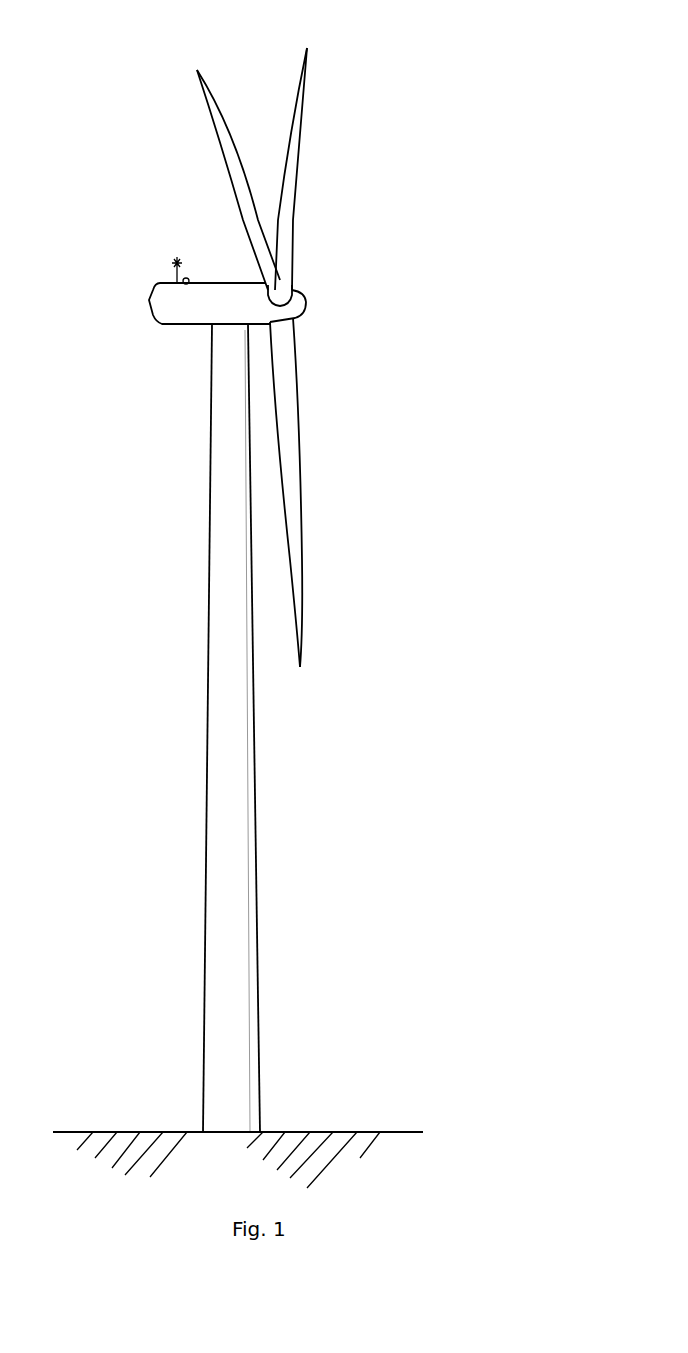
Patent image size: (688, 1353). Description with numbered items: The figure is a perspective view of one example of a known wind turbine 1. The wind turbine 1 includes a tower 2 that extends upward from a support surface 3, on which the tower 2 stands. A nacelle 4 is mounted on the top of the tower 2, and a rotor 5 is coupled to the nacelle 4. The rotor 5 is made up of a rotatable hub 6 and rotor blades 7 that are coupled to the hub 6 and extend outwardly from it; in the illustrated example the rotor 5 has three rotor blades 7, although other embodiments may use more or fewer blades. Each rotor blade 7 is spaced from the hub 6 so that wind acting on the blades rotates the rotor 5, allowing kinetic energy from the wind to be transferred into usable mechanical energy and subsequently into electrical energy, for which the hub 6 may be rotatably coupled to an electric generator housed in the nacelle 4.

The wind turbine 1 is at (424, 124).
The tower 2 is at (218, 840).
The support surface 3 is at (133, 1132).
The nacelle 4 is at (188, 327).
The rotor 5 is at (312, 272).
The rotatable hub 6 is at (303, 308).
The rotor blade 7 is at (233, 157).